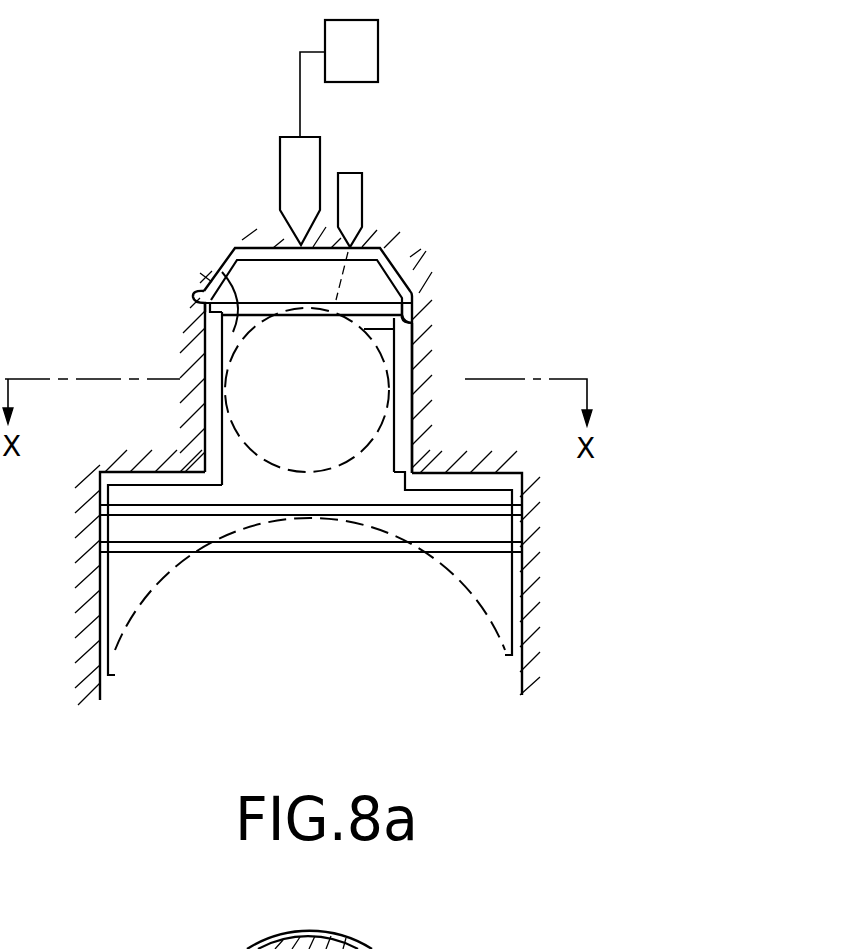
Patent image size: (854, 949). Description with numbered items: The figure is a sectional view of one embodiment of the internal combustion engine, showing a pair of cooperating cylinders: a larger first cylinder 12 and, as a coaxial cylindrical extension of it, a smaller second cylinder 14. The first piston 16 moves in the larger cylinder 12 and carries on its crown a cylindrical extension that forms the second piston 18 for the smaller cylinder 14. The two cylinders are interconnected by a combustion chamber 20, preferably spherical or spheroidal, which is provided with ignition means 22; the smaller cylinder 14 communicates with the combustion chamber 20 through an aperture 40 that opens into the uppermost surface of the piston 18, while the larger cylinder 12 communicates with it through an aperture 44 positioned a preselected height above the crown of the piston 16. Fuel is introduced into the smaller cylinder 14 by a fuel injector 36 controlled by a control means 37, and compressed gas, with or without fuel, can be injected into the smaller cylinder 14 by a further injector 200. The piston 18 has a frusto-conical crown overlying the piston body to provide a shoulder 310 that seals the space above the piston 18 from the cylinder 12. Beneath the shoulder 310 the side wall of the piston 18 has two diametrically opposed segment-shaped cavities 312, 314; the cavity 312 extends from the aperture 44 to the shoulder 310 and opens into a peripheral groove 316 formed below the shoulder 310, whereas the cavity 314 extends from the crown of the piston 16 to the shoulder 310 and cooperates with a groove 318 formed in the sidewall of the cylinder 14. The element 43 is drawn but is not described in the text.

The first cylinder 12 is at (132, 478).
The second cylinder 14 is at (228, 257).
The first piston 16 is at (482, 578).
The second piston 18 is at (226, 284).
The combustion chamber 20 is at (311, 398).
The ignition means 22 is at (382, 412).
The fuel injector 36 is at (295, 165).
The control means 37 is at (366, 53).
The aperture 40 is at (392, 269).
The step 43 is at (413, 471).
The aperture 44 is at (362, 463).
The injector 200 is at (348, 198).
The shoulder 310 is at (413, 322).
The cavity 312 is at (400, 368).
The cavity 314 is at (217, 367).
The peripheral groove 316 is at (308, 320).
The groove 318 is at (192, 294).